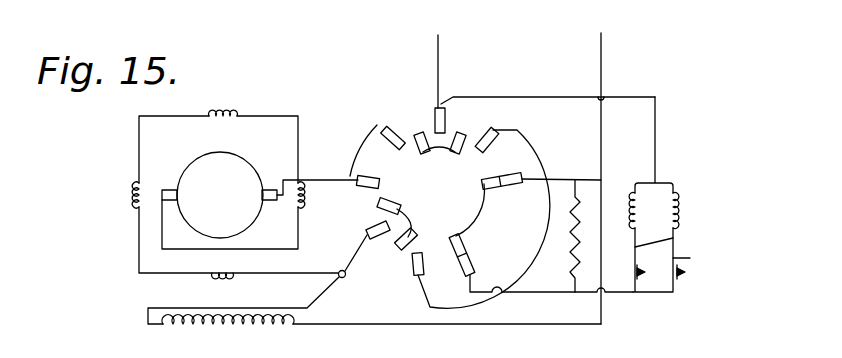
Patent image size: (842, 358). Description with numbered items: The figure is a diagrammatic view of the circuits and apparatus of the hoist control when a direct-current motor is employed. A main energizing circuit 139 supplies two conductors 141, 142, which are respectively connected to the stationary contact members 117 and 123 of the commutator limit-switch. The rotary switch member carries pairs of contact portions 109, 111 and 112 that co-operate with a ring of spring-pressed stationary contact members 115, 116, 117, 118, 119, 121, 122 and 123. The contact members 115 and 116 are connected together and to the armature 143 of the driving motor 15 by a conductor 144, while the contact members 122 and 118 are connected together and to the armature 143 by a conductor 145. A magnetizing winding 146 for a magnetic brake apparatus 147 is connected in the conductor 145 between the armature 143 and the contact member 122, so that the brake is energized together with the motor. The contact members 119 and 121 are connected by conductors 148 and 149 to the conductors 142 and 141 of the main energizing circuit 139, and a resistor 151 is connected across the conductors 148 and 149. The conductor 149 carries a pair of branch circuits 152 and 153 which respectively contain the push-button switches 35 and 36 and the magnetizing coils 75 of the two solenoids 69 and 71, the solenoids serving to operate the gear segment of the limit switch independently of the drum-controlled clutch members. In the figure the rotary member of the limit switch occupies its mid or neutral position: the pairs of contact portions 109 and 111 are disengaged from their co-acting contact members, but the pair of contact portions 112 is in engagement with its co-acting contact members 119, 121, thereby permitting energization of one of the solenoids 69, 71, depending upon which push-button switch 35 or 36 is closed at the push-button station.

The driving motor 15 is at (238, 194).
The armature 143 is at (219, 195).
The conductor 144 is at (283, 177).
The conductor 145 is at (263, 116).
The magnetizing winding 146 is at (139, 197).
The magnetic brake apparatus 147 is at (220, 264).
The main energizing circuit 139 is at (505, 33).
The conductor 141 is at (440, 80).
The conductor 142 is at (605, 63).
The contact portions 109 is at (440, 150).
The contact member 117 is at (435, 118).
The contact member 118 is at (485, 135).
The contact member 116 is at (392, 139).
The contact member 119 is at (504, 169).
The conductor 148 is at (562, 177).
The contact member 115 is at (366, 189).
The contact portions 111 is at (402, 208).
The contact portions 112 is at (480, 215).
The contact member 123 is at (367, 233).
The contact member 122 is at (413, 263).
The contact member 121 is at (470, 262).
The conductor 149 is at (551, 297).
The resistor 151 is at (570, 243).
The solenoid 69 is at (614, 205).
The magnetizing winding 75 is at (640, 216).
The solenoid 71 is at (680, 216).
The branch circuit 152 is at (673, 238).
The branch circuit 153 is at (690, 258).
The push-button switch 35 is at (642, 283).
The push-button switch 36 is at (685, 274).